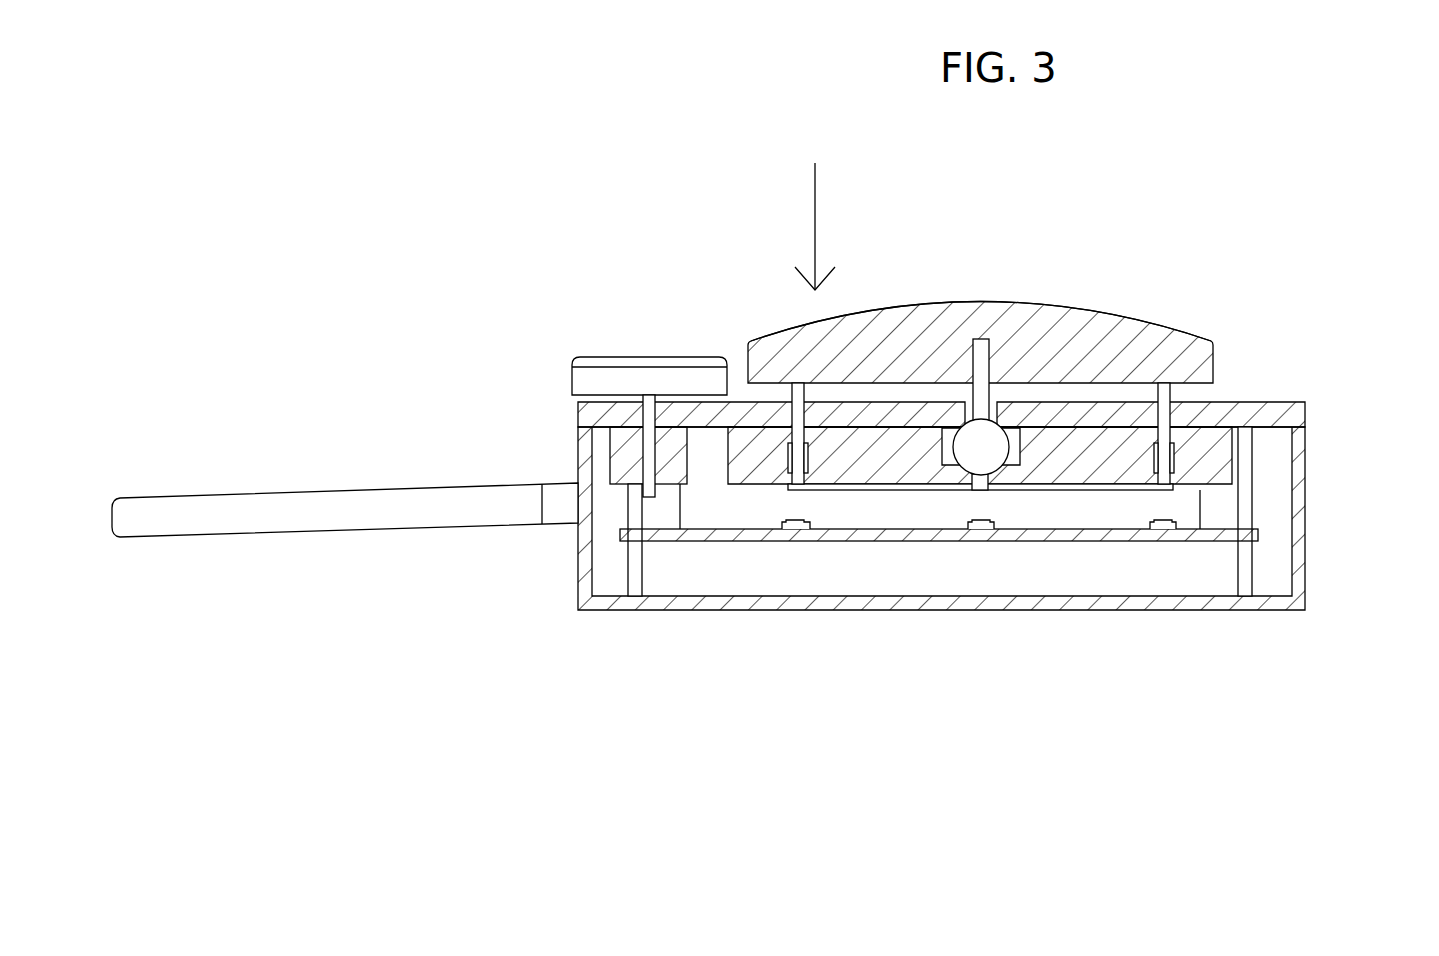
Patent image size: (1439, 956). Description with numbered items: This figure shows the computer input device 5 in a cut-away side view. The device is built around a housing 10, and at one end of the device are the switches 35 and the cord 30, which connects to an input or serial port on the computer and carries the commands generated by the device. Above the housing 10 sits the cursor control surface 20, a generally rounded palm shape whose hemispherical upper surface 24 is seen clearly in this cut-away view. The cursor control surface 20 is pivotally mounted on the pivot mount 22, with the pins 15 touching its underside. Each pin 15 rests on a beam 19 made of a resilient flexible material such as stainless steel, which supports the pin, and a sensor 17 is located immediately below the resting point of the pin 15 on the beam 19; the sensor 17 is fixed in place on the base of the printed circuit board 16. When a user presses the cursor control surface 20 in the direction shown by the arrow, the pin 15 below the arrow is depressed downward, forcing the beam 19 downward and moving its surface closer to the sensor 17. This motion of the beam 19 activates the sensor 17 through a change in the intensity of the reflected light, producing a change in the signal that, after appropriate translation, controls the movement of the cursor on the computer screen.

The computer input device 5 is at (1312, 418).
The housing 10 is at (1307, 593).
The pins 15 is at (790, 393).
The printed circuit board 16 is at (1042, 541).
The sensor 17 is at (795, 527).
The beam 19 is at (910, 492).
The cursor control surface 20 is at (1051, 289).
The pivot mount 22 is at (978, 453).
The upper surface 24 is at (1008, 318).
The cord 30 is at (337, 509).
The switches 35 is at (600, 378).